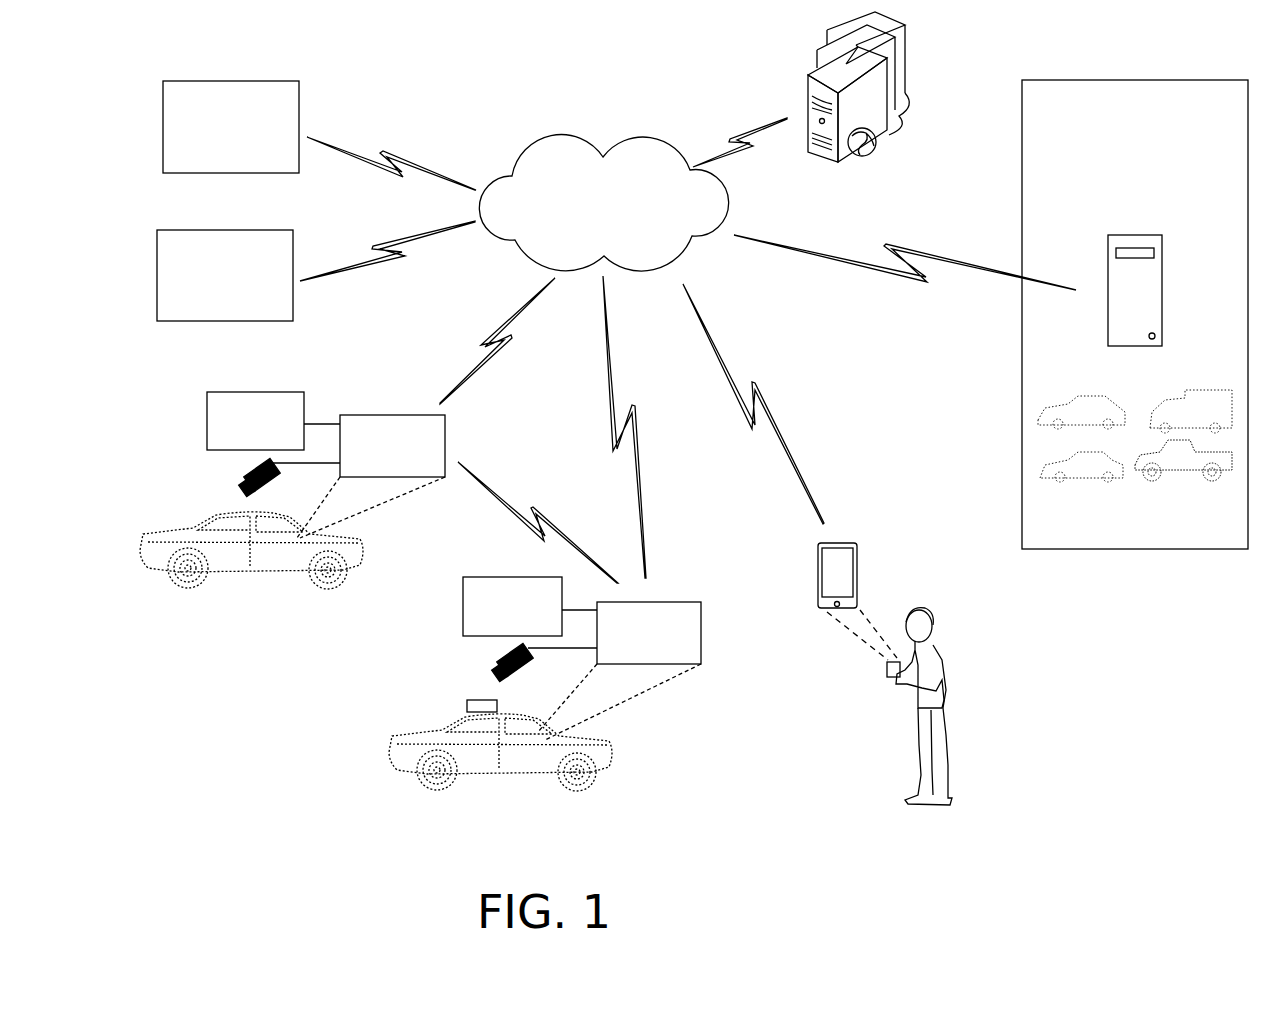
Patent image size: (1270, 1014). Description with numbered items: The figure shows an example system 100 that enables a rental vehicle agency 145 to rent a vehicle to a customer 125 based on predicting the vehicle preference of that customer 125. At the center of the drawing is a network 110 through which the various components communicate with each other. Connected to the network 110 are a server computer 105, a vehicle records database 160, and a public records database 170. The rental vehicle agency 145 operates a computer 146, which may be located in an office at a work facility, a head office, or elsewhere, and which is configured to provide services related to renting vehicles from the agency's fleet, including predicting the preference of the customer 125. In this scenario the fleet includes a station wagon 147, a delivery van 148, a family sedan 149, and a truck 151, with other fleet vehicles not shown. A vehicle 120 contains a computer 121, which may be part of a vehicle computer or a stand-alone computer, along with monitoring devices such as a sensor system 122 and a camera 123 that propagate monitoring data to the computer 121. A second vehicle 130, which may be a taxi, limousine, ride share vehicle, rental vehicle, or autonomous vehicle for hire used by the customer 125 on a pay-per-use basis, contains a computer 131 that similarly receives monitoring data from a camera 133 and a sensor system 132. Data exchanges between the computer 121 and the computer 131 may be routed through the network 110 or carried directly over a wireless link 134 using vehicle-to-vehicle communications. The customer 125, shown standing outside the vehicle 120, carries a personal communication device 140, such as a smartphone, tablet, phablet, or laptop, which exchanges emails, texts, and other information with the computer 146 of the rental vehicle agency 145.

The system 100 is at (1121, 794).
The server computer 105 is at (779, 74).
The network 110 is at (641, 183).
The vehicle 120 is at (126, 499).
The computer 121 is at (365, 415).
The sensor system 122 is at (261, 392).
The camera 123 is at (248, 477).
The customer 125 is at (250, 546).
The vehicle 130 is at (374, 698).
The computer 131 is at (680, 602).
The sensor system 132 is at (463, 610).
The camera 133 is at (497, 661).
The wireless link 134 is at (545, 512).
The personal communication device 140 is at (858, 583).
The rental vehicle agency 145 is at (1198, 113).
The computer 146 is at (1137, 235).
The station wagon 147 is at (1070, 381).
The delivery van 148 is at (1205, 379).
The family sedan 149 is at (1075, 504).
The truck 151 is at (1186, 496).
The vehicle records database 160 is at (256, 108).
The public records database 170 is at (251, 256).